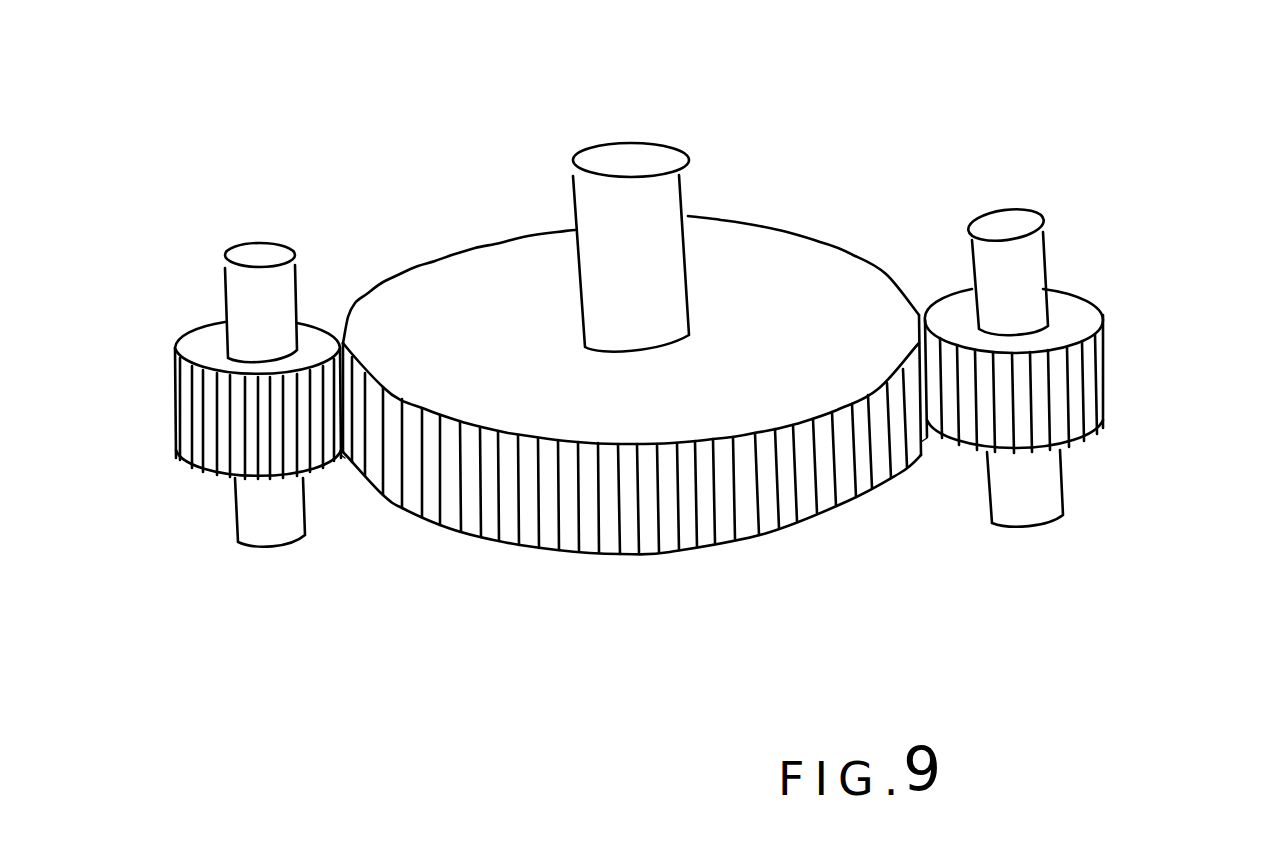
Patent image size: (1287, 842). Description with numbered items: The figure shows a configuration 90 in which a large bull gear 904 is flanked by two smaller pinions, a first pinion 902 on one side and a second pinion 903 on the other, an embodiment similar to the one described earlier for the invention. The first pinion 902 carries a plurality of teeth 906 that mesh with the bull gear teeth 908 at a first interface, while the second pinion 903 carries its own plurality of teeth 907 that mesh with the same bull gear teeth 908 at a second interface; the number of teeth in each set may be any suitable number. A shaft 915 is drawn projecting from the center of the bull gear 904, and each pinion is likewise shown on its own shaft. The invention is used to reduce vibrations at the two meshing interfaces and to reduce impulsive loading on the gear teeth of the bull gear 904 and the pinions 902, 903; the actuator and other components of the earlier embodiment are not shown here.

The configuration 90 is at (982, 38).
The first pinion 902 is at (168, 434).
The second pinion 903 is at (1105, 372).
The bull gear 904 is at (681, 393).
The teeth of the first pinion 906 is at (205, 386).
The teeth of the second pinion 907 is at (1107, 321).
The bull gear teeth 908 is at (629, 428).
The shaft 915 is at (677, 196).